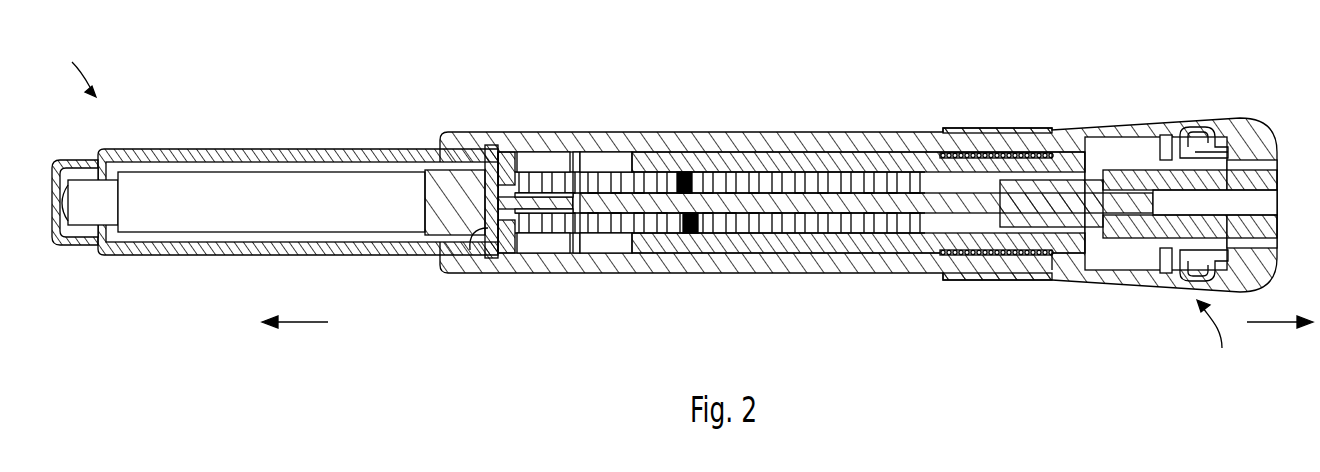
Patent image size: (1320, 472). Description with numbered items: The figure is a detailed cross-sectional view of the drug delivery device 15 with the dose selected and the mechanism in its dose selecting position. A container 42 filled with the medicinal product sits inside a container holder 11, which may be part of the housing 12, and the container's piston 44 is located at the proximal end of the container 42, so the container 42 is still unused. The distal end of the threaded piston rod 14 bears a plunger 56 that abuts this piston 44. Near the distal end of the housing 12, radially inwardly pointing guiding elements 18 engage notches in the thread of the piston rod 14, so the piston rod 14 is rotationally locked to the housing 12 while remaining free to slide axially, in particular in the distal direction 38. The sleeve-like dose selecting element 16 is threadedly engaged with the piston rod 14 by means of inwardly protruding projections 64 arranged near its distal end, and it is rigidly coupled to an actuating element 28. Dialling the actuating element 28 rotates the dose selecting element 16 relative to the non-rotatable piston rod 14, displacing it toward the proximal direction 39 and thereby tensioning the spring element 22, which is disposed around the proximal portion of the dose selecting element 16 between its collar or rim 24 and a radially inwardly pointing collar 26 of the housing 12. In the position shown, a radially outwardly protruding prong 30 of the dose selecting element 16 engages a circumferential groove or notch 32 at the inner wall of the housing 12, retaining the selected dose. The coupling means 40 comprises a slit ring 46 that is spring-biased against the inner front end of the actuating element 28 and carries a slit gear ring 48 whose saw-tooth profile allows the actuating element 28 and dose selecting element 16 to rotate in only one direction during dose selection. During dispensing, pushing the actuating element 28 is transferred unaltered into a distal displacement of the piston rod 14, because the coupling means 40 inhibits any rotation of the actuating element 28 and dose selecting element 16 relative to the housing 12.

The device 15 is at (70, 68).
The container holder 11 is at (262, 162).
The container 42 is at (192, 187).
The piston 44 is at (430, 195).
The guiding elements 18 is at (500, 158).
The plunger 56 is at (538, 195).
The groove or notch 32 is at (575, 185).
The piston rod 14 is at (613, 200).
The projections 64 is at (680, 178).
The prong 30 is at (688, 178).
The dose selecting element 16 is at (748, 168).
The housing 12 is at (792, 200).
The collar or rim 24 is at (944, 150).
The spring element 22 is at (982, 155).
The collar 26 is at (1047, 270).
The slit ring 46 is at (1196, 132).
The slit gear ring 48 is at (1207, 144).
The actuating element 28 is at (1262, 138).
The distal direction 38 is at (307, 324).
The proximal direction 39 is at (1268, 325).
The coupling means 40 is at (1215, 337).